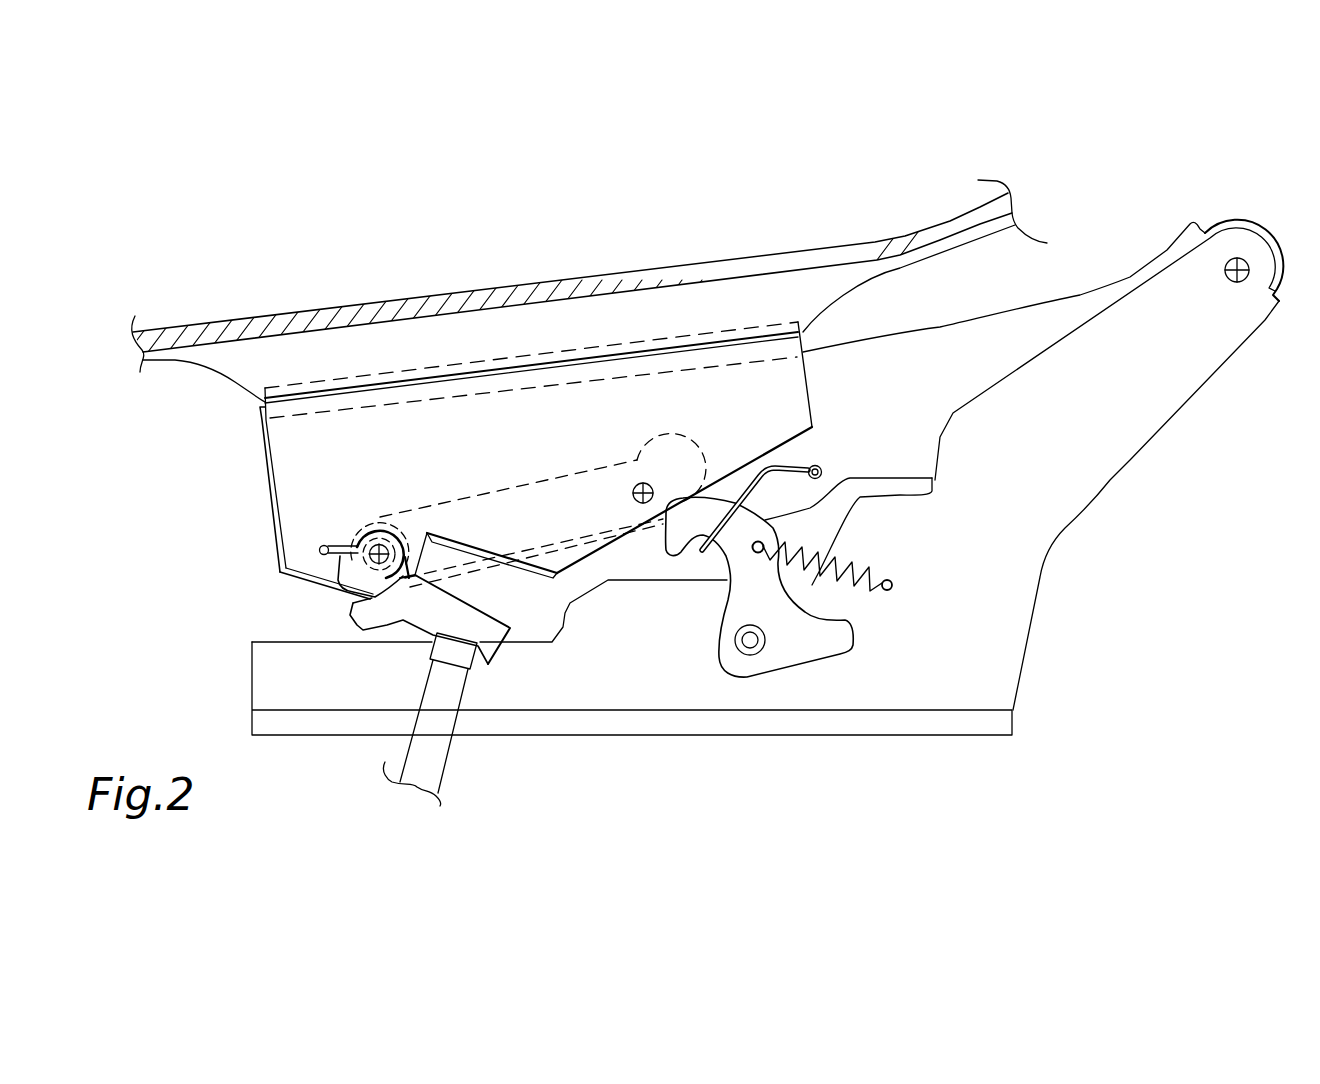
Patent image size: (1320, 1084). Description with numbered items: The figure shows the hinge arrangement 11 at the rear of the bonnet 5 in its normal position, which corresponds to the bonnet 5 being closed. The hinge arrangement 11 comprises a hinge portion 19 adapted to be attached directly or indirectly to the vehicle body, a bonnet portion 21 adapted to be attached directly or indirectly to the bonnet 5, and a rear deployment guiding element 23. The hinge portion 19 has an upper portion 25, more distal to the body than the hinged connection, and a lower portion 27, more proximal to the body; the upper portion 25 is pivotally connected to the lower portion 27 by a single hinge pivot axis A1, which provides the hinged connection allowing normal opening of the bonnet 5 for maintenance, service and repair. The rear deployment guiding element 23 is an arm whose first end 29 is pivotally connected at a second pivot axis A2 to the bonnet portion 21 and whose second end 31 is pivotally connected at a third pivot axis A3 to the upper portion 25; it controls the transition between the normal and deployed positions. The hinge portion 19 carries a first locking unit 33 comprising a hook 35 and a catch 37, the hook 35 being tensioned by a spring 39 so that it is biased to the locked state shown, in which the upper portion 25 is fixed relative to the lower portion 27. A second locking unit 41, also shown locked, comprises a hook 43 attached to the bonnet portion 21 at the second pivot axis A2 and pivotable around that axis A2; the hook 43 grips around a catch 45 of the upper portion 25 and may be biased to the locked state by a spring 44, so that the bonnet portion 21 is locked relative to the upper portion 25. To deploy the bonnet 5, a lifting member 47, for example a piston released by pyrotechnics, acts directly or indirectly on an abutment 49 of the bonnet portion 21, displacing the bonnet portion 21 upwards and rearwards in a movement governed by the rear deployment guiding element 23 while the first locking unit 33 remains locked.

The bonnet 5 is at (733, 270).
The hinge arrangement 11 is at (1198, 492).
The hinge portion 19 is at (1080, 594).
The bonnet portion 21 is at (210, 450).
The rear deployment guiding element 23 is at (500, 510).
The upper portion 25 is at (903, 407).
The lower portion 27 is at (1008, 506).
The first end 29 is at (332, 534).
The second end 31 is at (692, 473).
The first locking unit 33 is at (712, 562).
The hook 35 is at (770, 611).
The catch 37 is at (790, 471).
The spring 39 is at (850, 557).
The second locking unit 41 is at (338, 624).
The hook 43 is at (350, 612).
The spring 44 is at (340, 573).
The catch 45 is at (300, 582).
The lifting member 47 is at (435, 753).
The abutment 49 is at (497, 567).
The hinge pivot axis A1 is at (1243, 258).
The second pivot axis A2 is at (385, 543).
The third pivot axis A3 is at (647, 482).